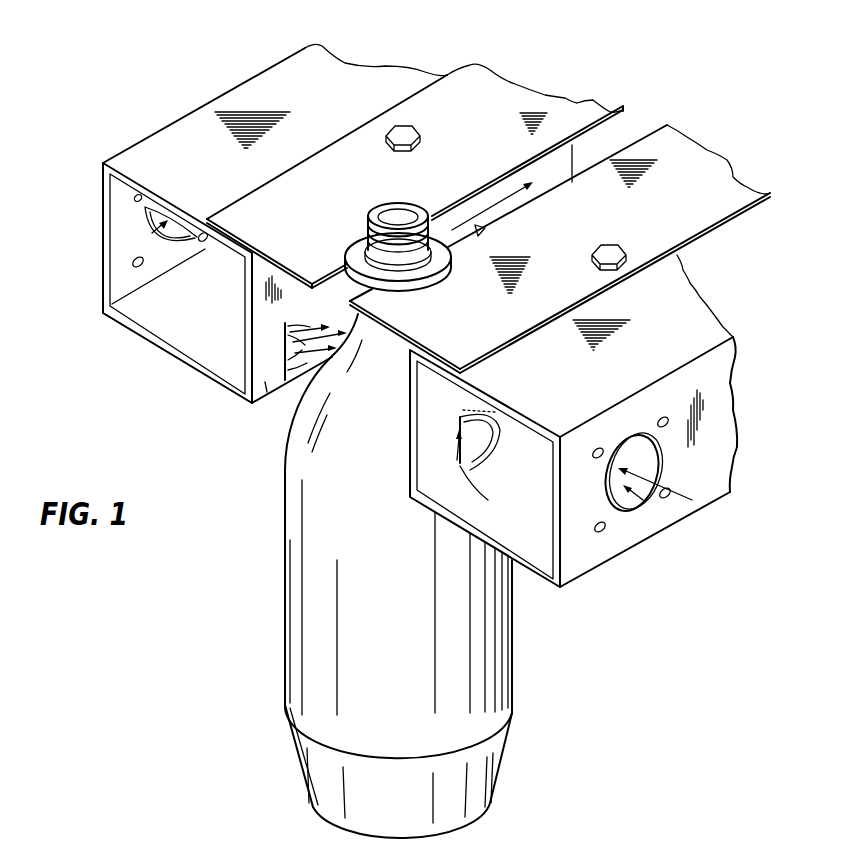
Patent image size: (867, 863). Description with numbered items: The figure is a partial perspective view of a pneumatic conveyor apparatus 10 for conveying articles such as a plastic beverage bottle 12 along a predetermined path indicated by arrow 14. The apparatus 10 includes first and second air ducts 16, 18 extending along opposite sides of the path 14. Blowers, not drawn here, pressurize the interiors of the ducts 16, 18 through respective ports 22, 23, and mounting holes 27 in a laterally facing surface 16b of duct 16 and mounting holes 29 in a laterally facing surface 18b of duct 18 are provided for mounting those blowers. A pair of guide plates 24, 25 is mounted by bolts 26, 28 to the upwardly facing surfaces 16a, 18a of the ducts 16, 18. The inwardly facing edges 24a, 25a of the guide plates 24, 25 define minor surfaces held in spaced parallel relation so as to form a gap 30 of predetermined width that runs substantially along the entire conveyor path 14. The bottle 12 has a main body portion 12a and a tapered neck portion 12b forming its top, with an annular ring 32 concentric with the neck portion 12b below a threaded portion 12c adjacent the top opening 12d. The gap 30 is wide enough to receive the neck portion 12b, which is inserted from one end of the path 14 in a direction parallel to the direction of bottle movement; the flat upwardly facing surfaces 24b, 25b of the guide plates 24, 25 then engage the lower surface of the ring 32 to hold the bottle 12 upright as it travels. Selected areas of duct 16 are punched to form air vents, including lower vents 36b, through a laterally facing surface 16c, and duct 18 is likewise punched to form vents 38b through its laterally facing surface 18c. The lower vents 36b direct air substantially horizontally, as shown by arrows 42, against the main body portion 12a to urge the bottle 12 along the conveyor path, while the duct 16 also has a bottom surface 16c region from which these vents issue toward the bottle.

The apparatus 10 is at (437, 26).
The bottle 12 is at (254, 649).
The main body portion 12a is at (284, 558).
The tapered neck portion 12b is at (356, 320).
The threaded portion 12c is at (372, 222).
The top opening 12d is at (404, 216).
The conveyor path 14 is at (490, 205).
The first air duct 16 is at (232, 87).
The upwardly facing surface of duct 16 16a is at (340, 72).
The laterally facing surface of duct 16 16b is at (103, 297).
The laterally facing surface of duct 16 16c is at (256, 407).
The second air duct 18 is at (723, 327).
The upwardly facing surface of duct 18 18a is at (690, 313).
The laterally facing surface of duct 18 18b is at (717, 415).
The laterally facing surface of duct 18 18c is at (427, 433).
The port 22 is at (152, 233).
The port 23 is at (640, 500).
The guide plate 24 is at (440, 85).
The inwardly facing edge 24a is at (610, 122).
The upwardly facing surface of guide plate 24 24b is at (525, 95).
The guide plate 25 is at (710, 163).
The inwardly facing edge 25a is at (660, 128).
The upwardly facing surface of guide plate 25 25b is at (720, 190).
The bolt 26 is at (405, 135).
The mounting holes 27 is at (110, 203).
The bolt 28 is at (610, 253).
The mounting holes 29 is at (660, 418).
The gap 30 is at (598, 139).
The annular ring 32 is at (355, 258).
The lower air vents 36b is at (287, 357).
The air vents 38b is at (488, 440).
The arrows 42 is at (315, 377).